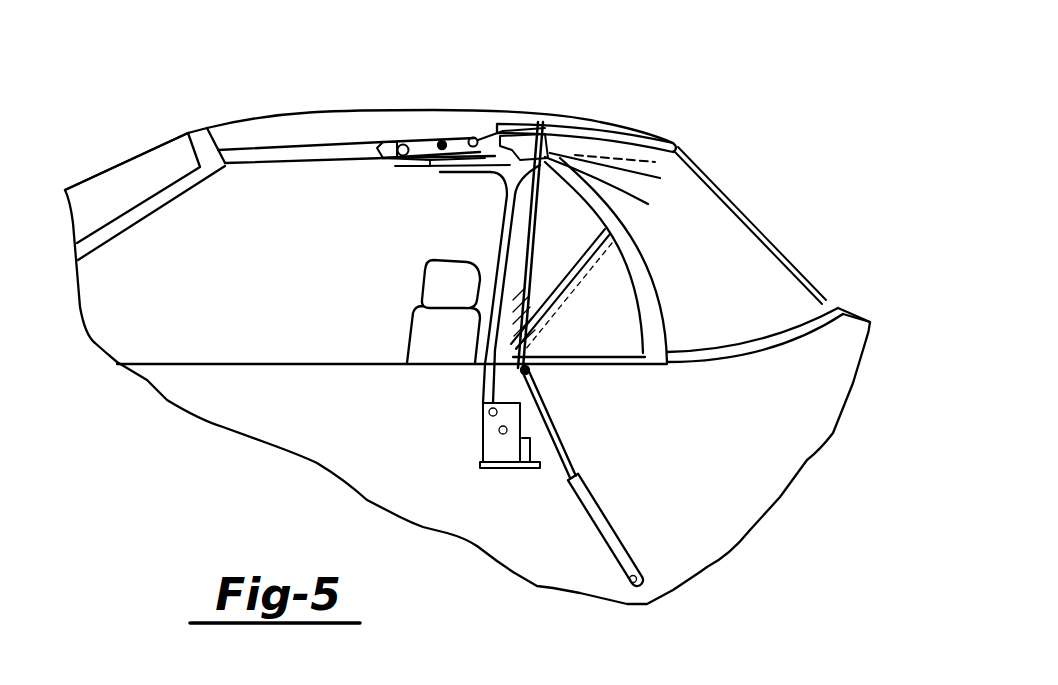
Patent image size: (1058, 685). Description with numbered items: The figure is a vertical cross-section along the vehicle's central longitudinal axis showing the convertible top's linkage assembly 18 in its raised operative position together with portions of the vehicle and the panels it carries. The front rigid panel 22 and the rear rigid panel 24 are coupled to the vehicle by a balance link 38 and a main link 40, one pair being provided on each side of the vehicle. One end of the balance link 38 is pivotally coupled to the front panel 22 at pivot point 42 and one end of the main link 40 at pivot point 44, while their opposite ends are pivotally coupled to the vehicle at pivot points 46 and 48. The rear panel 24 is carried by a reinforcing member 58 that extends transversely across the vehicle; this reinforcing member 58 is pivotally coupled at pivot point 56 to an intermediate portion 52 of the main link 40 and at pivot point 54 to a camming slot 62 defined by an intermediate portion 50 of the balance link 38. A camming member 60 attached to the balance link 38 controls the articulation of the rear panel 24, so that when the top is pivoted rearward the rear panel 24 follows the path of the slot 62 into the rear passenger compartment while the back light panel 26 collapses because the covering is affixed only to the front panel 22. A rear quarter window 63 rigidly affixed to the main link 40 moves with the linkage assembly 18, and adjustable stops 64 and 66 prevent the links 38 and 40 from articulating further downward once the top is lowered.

The linkage assembly 18 is at (402, 249).
The front rigid panel 22 is at (392, 128).
The rear rigid panel 24 is at (588, 130).
The back light panel 26 is at (710, 180).
The balance link 38 is at (398, 163).
The main link 40 is at (510, 213).
The pivot point 42 is at (408, 145).
The pivot point 44 is at (446, 140).
The pivot point 46 is at (484, 407).
The pivot point 48 is at (500, 432).
The intermediate portion of the balance link 50 is at (496, 173).
The intermediate portion of the main link 52 is at (433, 163).
The pivot point 54 is at (477, 137).
The pivot point 56 is at (545, 118).
The reinforcing member 58 is at (643, 140).
The camming member 60 is at (612, 190).
The camming slot 62 is at (621, 172).
The rear quarter window 63 is at (613, 300).
The adjustable stop 64 is at (522, 466).
The adjustable stop 66 is at (380, 146).